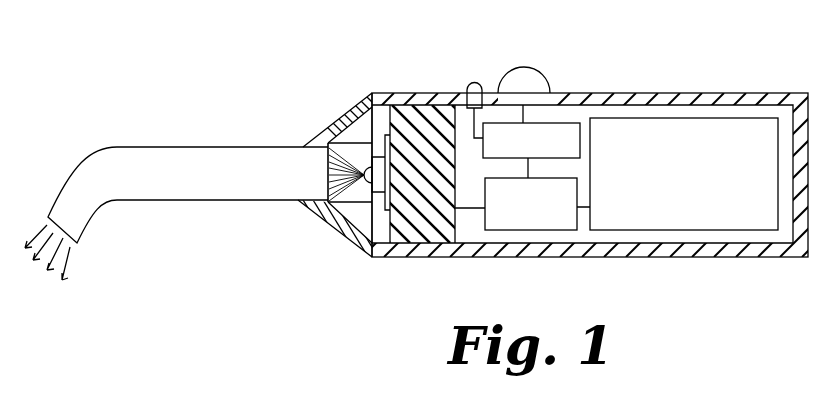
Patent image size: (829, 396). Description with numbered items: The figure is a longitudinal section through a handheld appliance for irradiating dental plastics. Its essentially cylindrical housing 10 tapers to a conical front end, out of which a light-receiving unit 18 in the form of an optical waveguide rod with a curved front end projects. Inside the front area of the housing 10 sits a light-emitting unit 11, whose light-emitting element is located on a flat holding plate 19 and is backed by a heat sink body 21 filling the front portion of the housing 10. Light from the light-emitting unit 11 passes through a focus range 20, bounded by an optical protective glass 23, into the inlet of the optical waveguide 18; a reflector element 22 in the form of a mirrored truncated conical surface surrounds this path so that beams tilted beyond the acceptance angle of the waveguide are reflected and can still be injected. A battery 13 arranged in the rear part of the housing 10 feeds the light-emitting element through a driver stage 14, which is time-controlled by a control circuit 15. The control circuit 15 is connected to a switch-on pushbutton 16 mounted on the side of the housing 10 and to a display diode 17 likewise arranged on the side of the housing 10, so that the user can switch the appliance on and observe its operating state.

The housing 10 is at (682, 98).
The light-emitting unit 11 is at (366, 158).
The battery 13 is at (695, 225).
The driver stage 14 is at (539, 224).
The control circuit 15 is at (566, 128).
The switch-on pushbutton 16 is at (527, 83).
The display diode 17 is at (471, 82).
The light-receiving unit 18 is at (202, 201).
The holding plate 19 is at (379, 237).
The focus range 20 is at (328, 158).
The heat sink body 21 is at (422, 230).
The reflector element 22 is at (343, 217).
The optical protective glass 23 is at (328, 190).